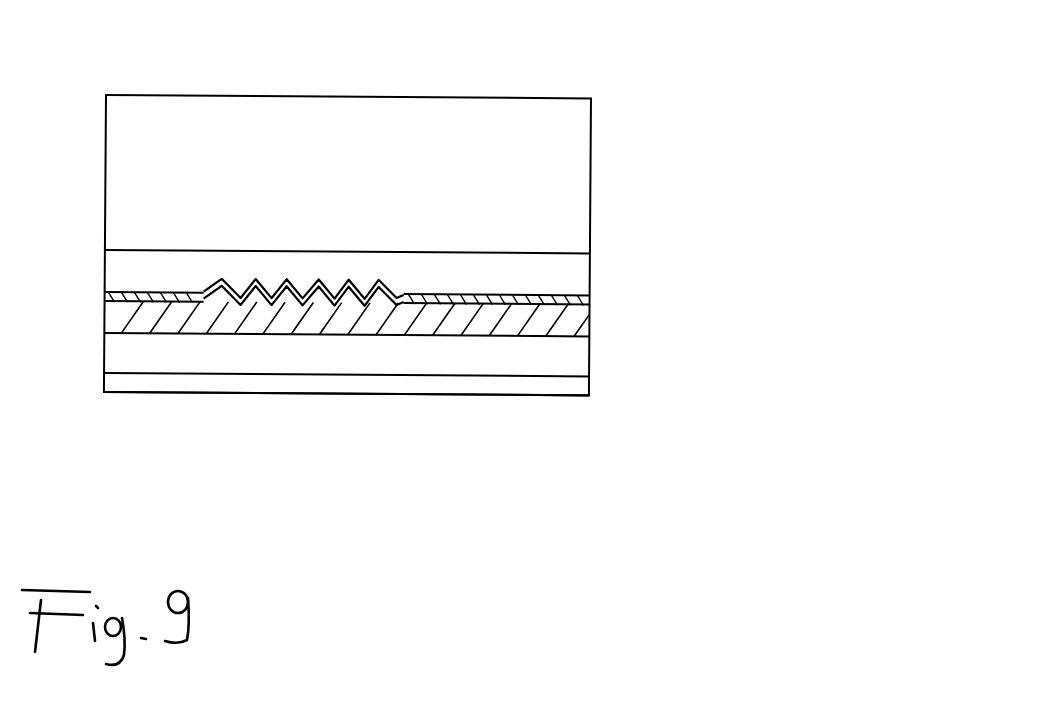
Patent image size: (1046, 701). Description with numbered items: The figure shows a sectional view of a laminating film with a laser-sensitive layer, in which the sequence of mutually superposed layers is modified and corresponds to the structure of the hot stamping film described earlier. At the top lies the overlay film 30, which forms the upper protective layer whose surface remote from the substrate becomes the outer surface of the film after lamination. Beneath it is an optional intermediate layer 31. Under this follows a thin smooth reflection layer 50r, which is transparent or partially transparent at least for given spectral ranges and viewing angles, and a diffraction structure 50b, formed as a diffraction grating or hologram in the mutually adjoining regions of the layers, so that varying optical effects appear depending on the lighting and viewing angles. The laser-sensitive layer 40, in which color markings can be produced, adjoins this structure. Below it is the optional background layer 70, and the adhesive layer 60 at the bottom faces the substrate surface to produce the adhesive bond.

The overlay film 30 is at (552, 135).
The intermediate layer 31 is at (535, 273).
The smooth reflection layer 50r is at (545, 302).
The diffraction structure 50b is at (305, 297).
The laser-sensitive layer 40 is at (533, 322).
The background layer 70 is at (530, 355).
The adhesive layer 60 is at (530, 386).